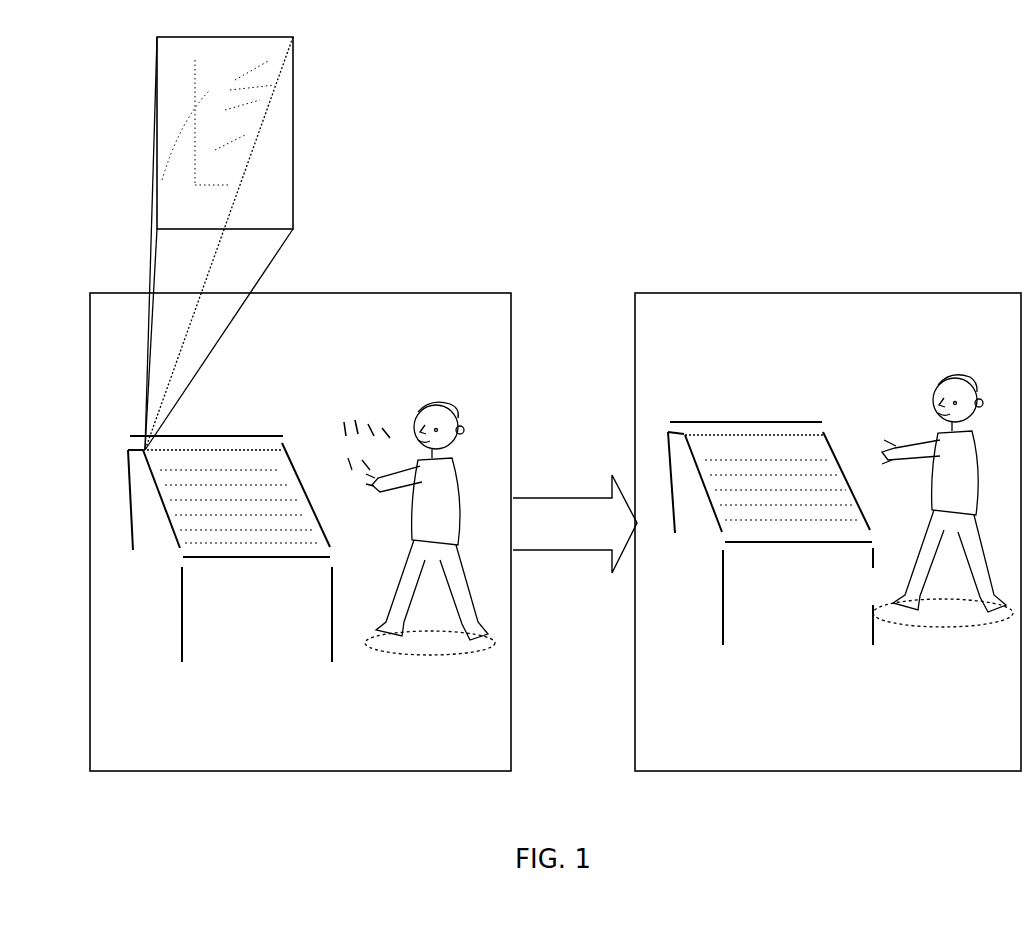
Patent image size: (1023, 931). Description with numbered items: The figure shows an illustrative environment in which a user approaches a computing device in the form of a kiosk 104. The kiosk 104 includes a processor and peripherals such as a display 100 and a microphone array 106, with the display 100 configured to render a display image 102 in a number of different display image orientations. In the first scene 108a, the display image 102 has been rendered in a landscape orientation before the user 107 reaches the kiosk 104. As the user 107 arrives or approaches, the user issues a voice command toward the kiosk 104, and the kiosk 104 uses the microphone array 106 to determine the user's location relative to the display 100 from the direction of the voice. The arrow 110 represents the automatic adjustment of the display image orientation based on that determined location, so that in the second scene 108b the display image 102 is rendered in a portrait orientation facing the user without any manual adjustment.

The display 100 is at (250, 455).
The display image 102 is at (215, 500).
The kiosk 104 is at (213, 436).
The microphone array 106 is at (293, 100).
The user 107 is at (460, 477).
The landscape orientation scene 108a is at (415, 293).
The portrait orientation scene 108b is at (758, 293).
The arrow 110 is at (575, 561).